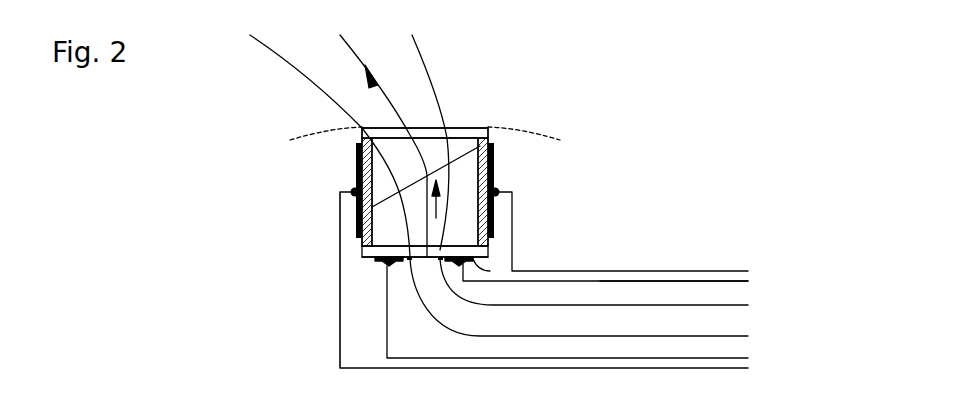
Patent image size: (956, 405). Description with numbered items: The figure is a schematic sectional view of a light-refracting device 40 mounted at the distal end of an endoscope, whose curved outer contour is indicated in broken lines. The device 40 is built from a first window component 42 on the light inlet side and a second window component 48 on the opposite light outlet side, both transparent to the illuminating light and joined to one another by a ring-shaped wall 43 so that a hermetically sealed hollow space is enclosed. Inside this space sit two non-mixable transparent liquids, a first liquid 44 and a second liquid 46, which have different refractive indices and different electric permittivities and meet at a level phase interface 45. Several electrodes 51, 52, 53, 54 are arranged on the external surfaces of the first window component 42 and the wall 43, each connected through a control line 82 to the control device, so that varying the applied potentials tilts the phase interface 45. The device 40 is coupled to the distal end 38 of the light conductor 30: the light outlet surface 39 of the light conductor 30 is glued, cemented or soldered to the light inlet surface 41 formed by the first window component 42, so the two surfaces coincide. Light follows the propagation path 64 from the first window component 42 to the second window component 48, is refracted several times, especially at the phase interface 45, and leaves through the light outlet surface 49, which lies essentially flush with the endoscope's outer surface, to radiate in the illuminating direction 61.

The light conductor 30 is at (720, 305).
The distal end of the light conductor 38 is at (426, 263).
The light outlet surface of the light conductor 39 is at (424, 256).
The light-refracting device 40 is at (586, 121).
The light inlet surface 41 is at (410, 247).
The first window component 42 is at (473, 250).
The ring-shaped wall 43 is at (481, 146).
The first liquid 44 is at (377, 215).
The phase interface 45 is at (387, 194).
The second liquid 46 is at (377, 155).
The second window component 48 is at (485, 128).
The light outlet surface of the light-refracting device 49 is at (456, 124).
The electrode 51 is at (370, 235).
The electrode 52 is at (377, 264).
The electrode 53 is at (513, 272).
The electrode 54 is at (496, 173).
The illuminating direction 61 is at (377, 82).
The propagation path 64 is at (438, 202).
The control line 82 is at (667, 270).